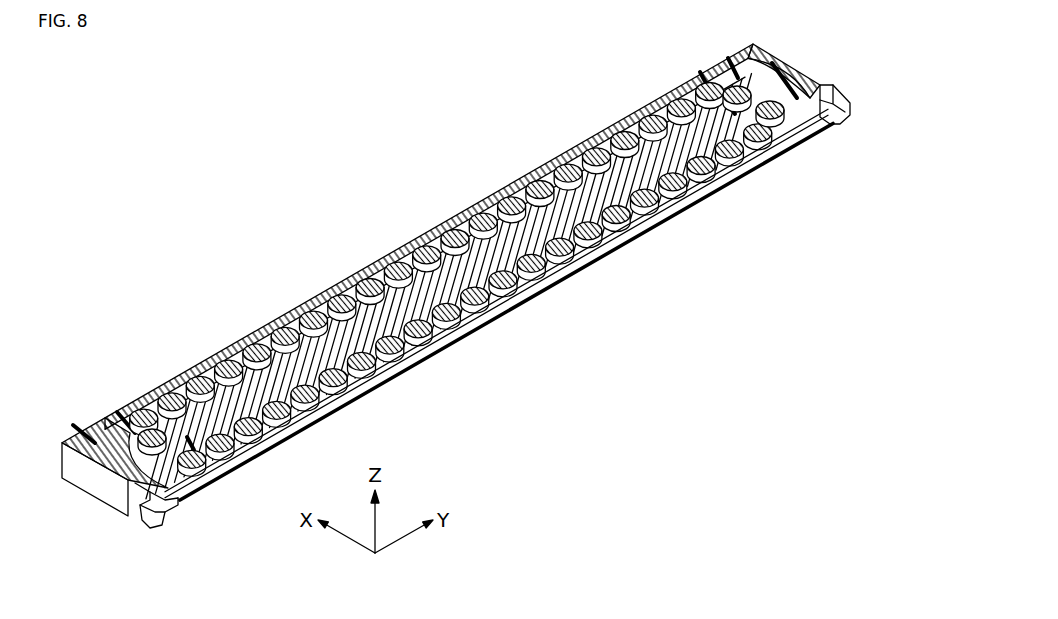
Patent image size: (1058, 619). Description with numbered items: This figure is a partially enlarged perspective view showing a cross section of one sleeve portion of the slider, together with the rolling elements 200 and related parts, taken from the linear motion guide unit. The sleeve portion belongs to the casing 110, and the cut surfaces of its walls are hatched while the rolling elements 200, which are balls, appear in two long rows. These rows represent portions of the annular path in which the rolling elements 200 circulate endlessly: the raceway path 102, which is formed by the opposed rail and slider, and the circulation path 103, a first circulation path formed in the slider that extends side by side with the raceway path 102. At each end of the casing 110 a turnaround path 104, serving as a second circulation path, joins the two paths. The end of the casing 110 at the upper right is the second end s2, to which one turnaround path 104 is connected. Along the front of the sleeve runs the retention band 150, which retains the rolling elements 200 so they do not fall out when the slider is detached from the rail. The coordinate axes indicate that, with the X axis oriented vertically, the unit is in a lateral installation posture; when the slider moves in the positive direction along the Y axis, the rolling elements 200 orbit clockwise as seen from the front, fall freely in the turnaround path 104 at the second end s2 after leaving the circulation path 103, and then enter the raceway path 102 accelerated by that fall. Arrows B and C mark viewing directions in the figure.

The raceway path 102 is at (672, 202).
The circulation path 103 is at (318, 296).
The turnaround path 104 is at (832, 125).
The casing 110 is at (457, 278).
The retention band 150 is at (607, 254).
The rolling element 200 is at (396, 264).
The second end s2 is at (778, 134).
The direction B is at (766, 174).
The direction C is at (512, 326).